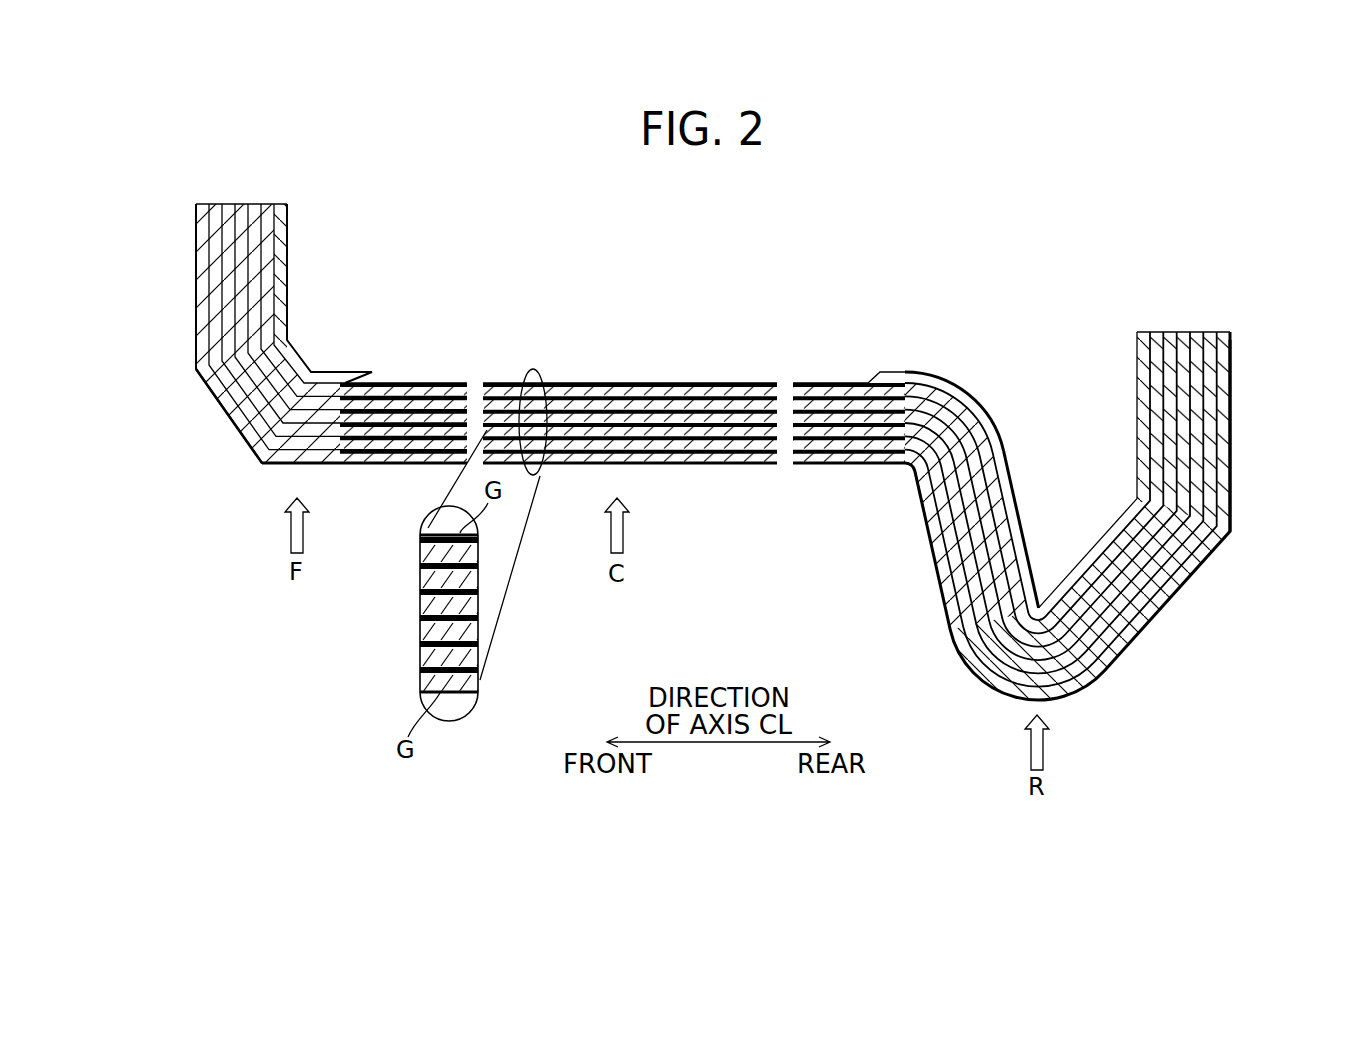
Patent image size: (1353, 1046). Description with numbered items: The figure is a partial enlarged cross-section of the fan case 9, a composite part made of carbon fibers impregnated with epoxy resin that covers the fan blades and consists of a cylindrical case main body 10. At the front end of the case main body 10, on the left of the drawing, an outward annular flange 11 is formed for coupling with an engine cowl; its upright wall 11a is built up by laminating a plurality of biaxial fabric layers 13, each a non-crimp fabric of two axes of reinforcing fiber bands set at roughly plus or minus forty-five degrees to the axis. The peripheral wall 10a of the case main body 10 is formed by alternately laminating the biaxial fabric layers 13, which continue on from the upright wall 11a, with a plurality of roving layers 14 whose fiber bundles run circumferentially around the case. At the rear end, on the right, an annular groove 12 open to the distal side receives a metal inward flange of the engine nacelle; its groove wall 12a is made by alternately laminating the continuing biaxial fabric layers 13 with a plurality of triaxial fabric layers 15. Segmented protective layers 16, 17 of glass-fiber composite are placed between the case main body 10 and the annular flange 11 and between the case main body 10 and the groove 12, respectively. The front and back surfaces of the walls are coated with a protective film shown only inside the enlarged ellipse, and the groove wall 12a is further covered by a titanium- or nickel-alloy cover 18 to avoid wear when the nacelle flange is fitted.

The fan case 9 is at (832, 284).
The case main body 10 is at (739, 368).
The peripheral wall 10a is at (686, 383).
The annular flange 11 is at (185, 256).
The upright wall 11a is at (227, 413).
The groove 12 is at (1238, 380).
The groove wall 12a is at (1232, 432).
The biaxial fabric layer 13 is at (213, 318).
The roving layer 14 is at (440, 386).
The triaxial fabric layer 15 is at (895, 465).
The protective layer 16 is at (282, 243).
The protective layer 17 is at (970, 392).
The cover 18 is at (1000, 440).